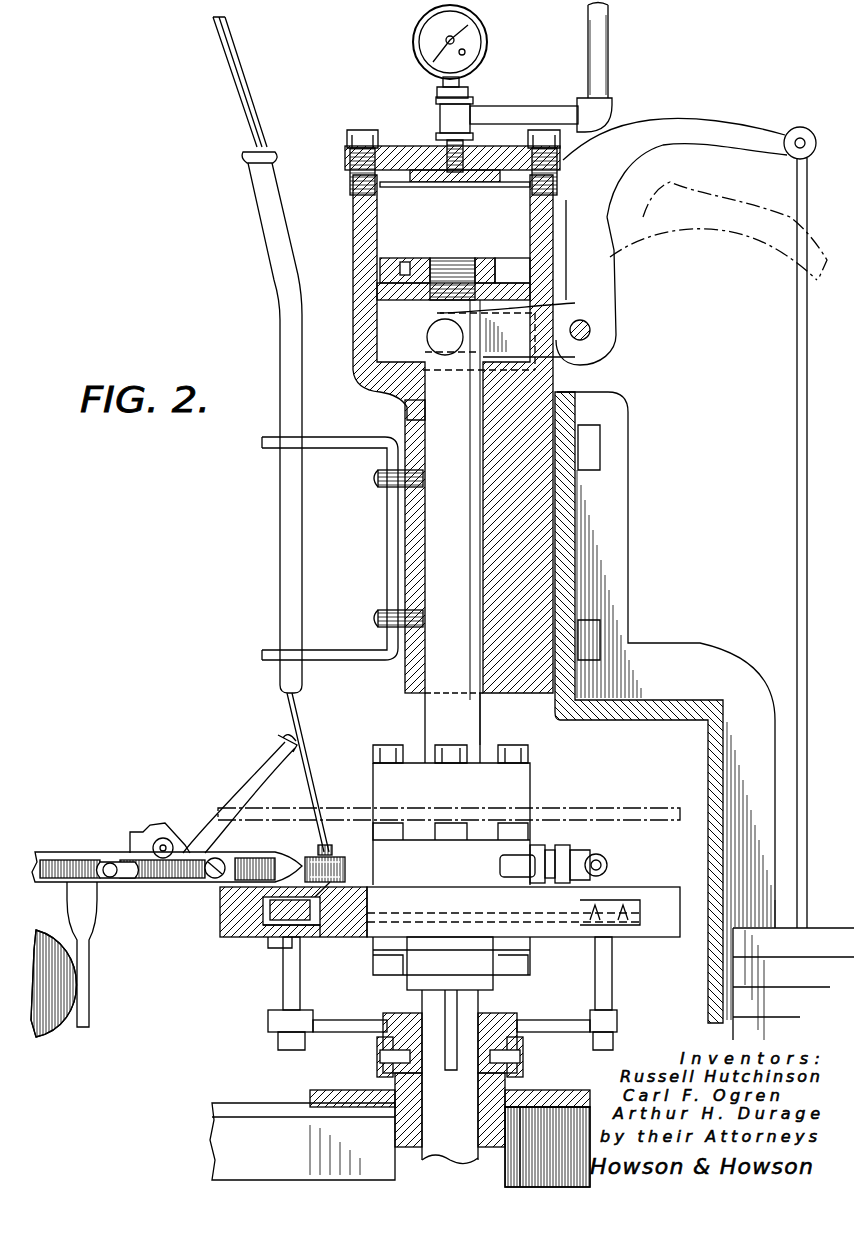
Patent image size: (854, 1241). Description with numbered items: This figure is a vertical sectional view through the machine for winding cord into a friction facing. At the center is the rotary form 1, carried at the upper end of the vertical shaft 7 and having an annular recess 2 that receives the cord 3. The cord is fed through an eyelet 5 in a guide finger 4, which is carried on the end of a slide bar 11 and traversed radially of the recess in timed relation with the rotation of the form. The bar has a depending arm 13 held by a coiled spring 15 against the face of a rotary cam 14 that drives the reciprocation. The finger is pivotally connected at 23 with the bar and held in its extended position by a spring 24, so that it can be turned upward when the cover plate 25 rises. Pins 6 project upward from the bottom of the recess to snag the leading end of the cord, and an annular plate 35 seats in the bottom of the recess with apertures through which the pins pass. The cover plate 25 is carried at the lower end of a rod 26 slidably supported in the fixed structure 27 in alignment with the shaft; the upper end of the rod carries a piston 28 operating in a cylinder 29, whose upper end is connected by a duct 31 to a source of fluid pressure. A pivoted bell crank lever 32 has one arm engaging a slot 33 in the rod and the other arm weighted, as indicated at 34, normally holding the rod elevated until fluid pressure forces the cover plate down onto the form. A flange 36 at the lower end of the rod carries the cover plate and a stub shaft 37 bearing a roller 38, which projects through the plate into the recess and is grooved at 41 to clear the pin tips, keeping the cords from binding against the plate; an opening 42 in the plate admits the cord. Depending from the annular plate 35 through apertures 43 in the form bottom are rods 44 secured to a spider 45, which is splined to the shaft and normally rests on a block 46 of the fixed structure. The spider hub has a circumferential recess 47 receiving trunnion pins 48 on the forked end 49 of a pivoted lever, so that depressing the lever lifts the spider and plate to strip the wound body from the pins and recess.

The rotary form 1 is at (448, 905).
The annular recess 2 is at (270, 912).
The cord 3 is at (282, 703).
The guide finger 4 is at (255, 778).
The eyelet 5 is at (327, 845).
The pins 6 is at (302, 868).
The vertical shaft 7 is at (440, 1152).
The slide bar 11 is at (56, 860).
The depending arm 13 is at (83, 968).
The rotary cam 14 is at (43, 1030).
The coiled spring 15 is at (56, 880).
The pivotal connection 23 is at (160, 838).
The spring 24 is at (142, 878).
The cover plate 25 is at (636, 808).
The rod 26 is at (438, 717).
The fixed structure 27 is at (410, 552).
The piston 28 is at (420, 262).
The cylinder 29 is at (355, 240).
The duct 31 is at (508, 112).
The bell crank lever 32 is at (607, 298).
The slot 33 is at (428, 325).
The weight 34 is at (808, 984).
The annular plate 35 is at (272, 935).
The flange 36 is at (385, 858).
The stub shaft 37 is at (500, 865).
The roller 38 is at (592, 850).
The groove 41 is at (562, 848).
The opening 42 is at (275, 898).
The apertures 43 is at (275, 945).
The rods 44 is at (300, 990).
The spider 45 is at (410, 1022).
The block 46 is at (400, 1086).
The circumferential recess 47 is at (470, 1060).
The trunnion pins 48 is at (384, 1056).
The forked end 49 is at (378, 1045).